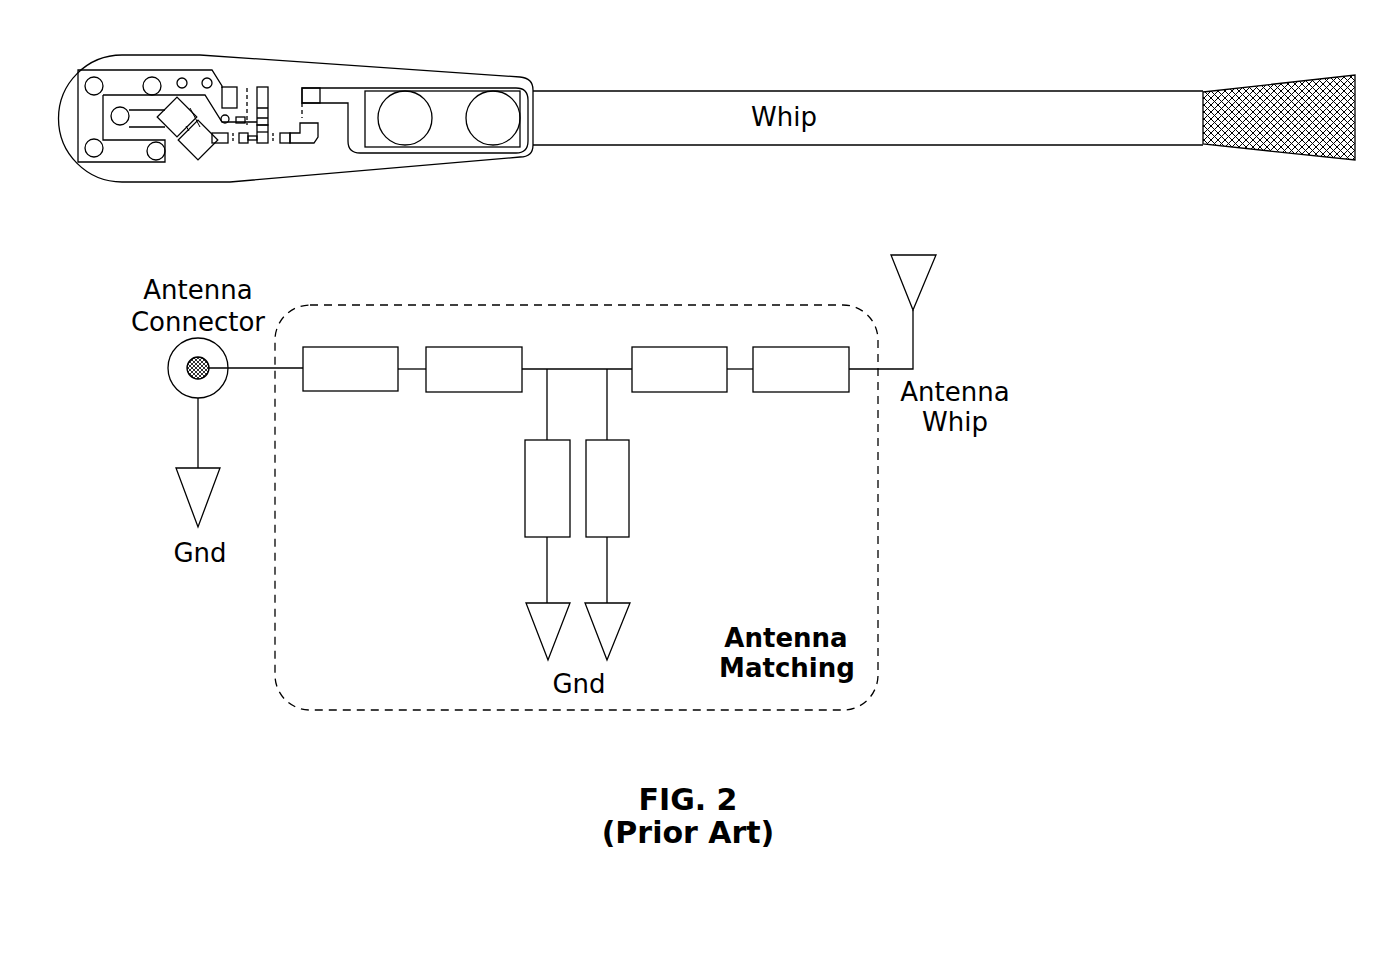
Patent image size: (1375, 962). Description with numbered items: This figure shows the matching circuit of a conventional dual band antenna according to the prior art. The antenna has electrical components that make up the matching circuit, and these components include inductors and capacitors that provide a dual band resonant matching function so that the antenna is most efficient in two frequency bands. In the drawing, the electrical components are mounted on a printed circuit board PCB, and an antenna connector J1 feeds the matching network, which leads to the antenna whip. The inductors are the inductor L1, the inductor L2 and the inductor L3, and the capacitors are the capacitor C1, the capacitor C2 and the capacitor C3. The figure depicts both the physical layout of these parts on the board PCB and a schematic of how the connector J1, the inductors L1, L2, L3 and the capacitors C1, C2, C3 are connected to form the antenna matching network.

The printed circuit board PCB is at (427, 167).
The antenna connector J1 is at (125, 132).
The inductor L1 is at (322, 110).
The inductor L2 is at (188, 138).
The inductor L3 is at (247, 90).
The capacitor C1 is at (277, 150).
The capacitor C2 is at (232, 150).
The capacitor C3 is at (250, 107).